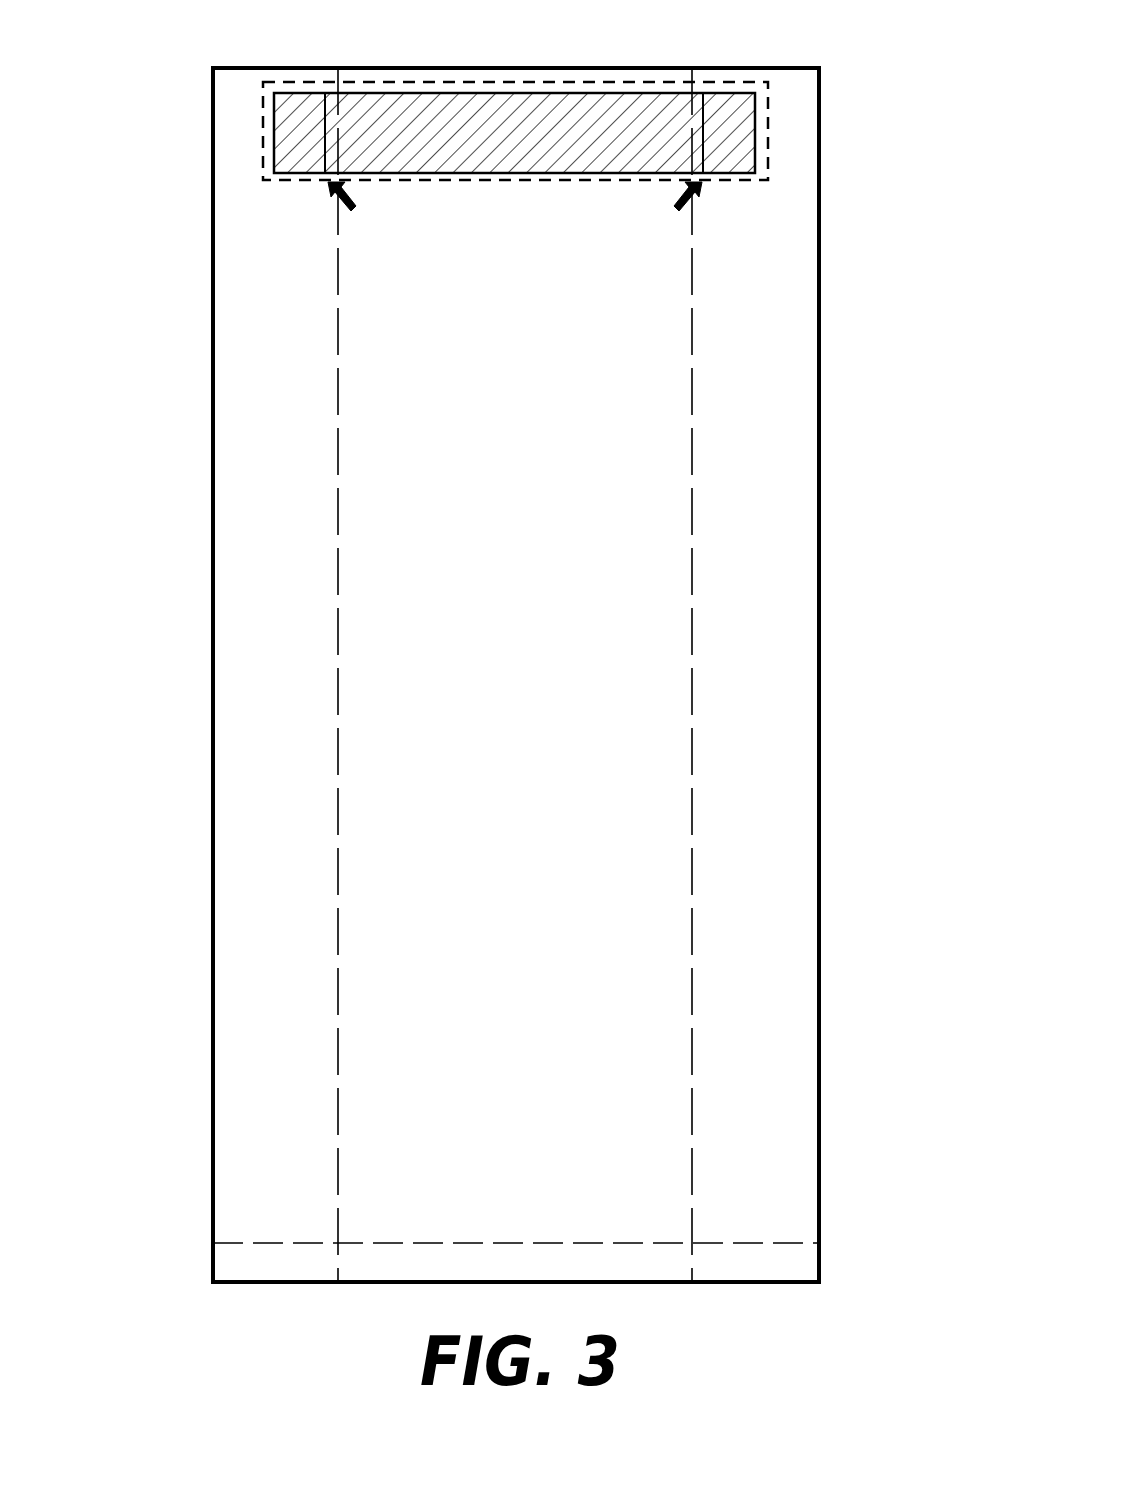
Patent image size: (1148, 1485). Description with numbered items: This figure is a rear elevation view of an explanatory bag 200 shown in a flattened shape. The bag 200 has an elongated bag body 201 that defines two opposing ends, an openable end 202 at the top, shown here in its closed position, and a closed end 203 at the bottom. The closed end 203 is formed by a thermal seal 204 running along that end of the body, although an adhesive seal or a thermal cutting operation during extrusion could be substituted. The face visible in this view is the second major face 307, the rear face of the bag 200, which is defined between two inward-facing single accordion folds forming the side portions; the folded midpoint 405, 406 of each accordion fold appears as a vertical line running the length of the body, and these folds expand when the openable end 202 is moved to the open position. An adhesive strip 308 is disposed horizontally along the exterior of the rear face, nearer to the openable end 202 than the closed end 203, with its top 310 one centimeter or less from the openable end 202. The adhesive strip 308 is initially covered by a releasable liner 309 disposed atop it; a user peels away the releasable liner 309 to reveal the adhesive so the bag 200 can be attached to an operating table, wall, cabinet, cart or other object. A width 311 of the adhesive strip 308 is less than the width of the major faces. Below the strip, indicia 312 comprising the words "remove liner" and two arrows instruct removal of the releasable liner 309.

The bag 200 is at (160, 476).
The elongated bag body 201 is at (511, 984).
The openable end 202 is at (624, 50).
The closed end 203 is at (703, 1304).
The thermal seal 204 is at (531, 1242).
The second major face 307 is at (780, 521).
The adhesive strip 308 is at (291, 132).
The releasable liner 309 is at (768, 132).
The top of the adhesive strip 310 is at (371, 92).
The width of the adhesive strip 311 is at (274, 273).
The indicia 312 is at (489, 236).
The folded midpoint 405 is at (338, 812).
The folded midpoint 406 is at (692, 818).